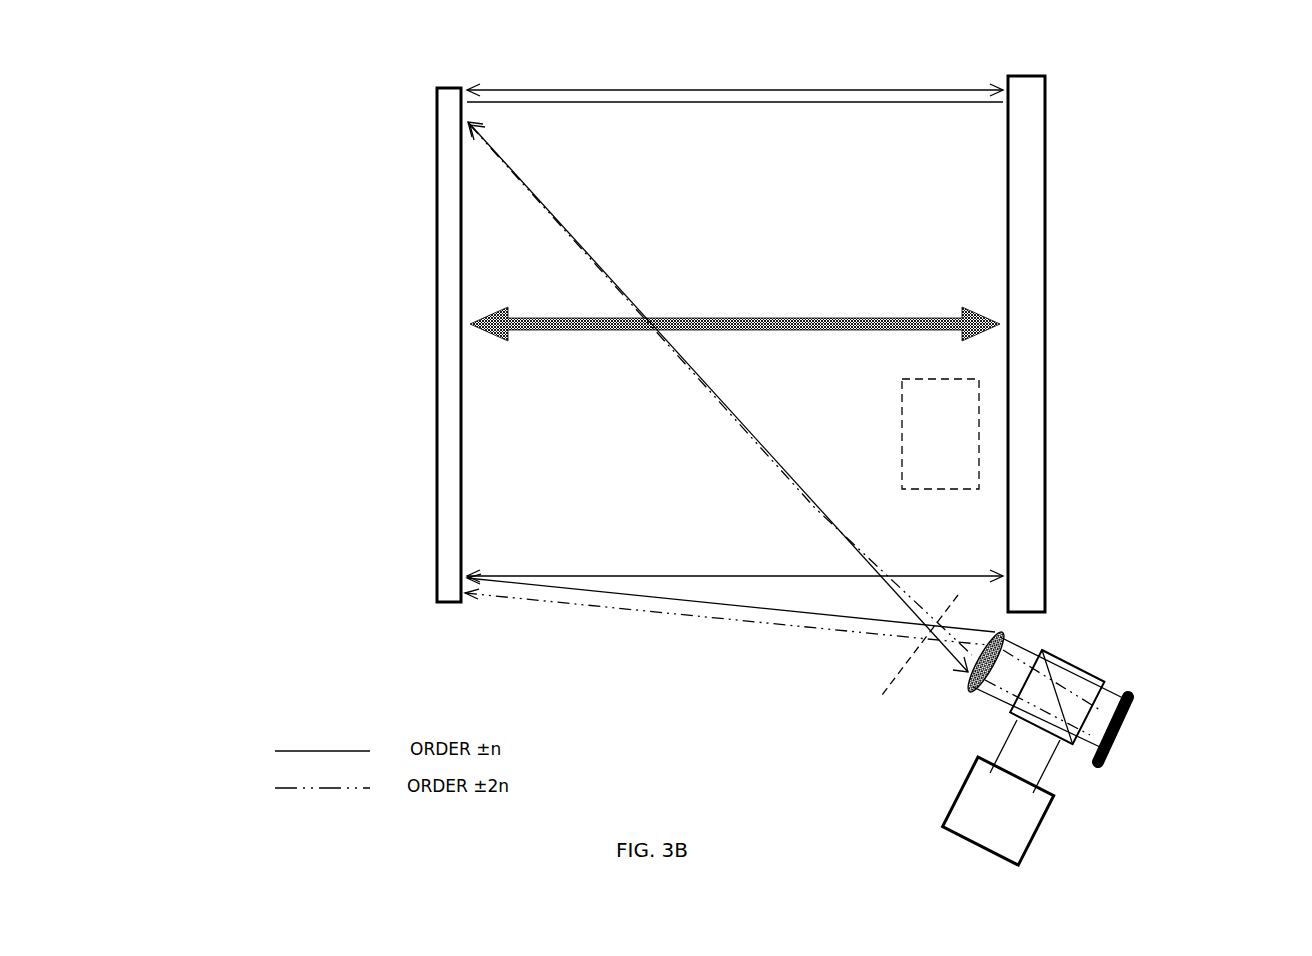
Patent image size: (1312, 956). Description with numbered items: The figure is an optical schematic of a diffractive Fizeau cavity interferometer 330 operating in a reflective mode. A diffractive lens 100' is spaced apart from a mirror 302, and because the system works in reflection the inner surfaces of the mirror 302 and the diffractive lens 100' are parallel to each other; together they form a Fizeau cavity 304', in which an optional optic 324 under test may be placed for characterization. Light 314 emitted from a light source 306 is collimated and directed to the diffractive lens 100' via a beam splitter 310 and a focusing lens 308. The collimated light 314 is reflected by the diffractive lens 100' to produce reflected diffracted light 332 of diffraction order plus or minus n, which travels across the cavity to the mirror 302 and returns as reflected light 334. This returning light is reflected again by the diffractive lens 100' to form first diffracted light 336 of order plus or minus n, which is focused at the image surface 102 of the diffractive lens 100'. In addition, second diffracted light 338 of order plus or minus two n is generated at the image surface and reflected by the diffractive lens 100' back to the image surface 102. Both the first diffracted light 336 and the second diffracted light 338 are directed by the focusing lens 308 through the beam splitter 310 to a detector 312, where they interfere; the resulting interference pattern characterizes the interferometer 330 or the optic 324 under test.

The diffractive lens 100' is at (399, 345).
The image surface 102 is at (886, 692).
The mirror 302 is at (1027, 291).
The Fizeau cavity 304' is at (839, 214).
The light source 306 is at (1002, 812).
The focusing lens 308 is at (962, 705).
The beam splitter 310 is at (1087, 670).
The detector 312 is at (1152, 705).
The light 314 is at (1050, 762).
The optic under test 324 is at (962, 439).
The diffractive Fizeau cavity interferometer 330 is at (829, 24).
The reflected diffracted light 332 is at (675, 90).
The reflected light 334 is at (628, 103).
The first diffracted light 336 is at (792, 452).
The second diffracted light 338 is at (712, 400).